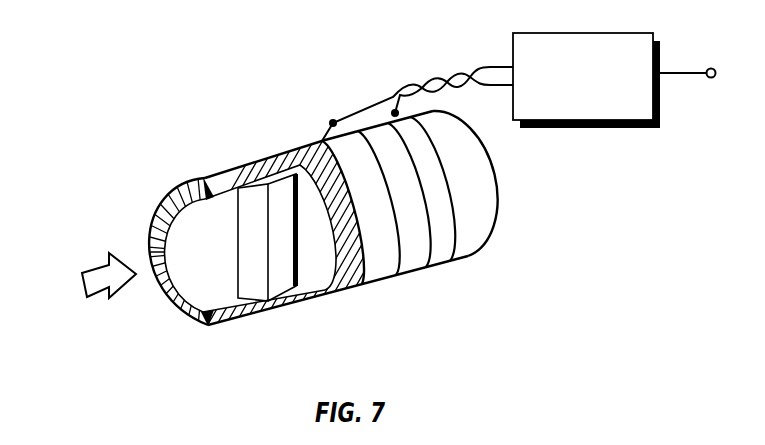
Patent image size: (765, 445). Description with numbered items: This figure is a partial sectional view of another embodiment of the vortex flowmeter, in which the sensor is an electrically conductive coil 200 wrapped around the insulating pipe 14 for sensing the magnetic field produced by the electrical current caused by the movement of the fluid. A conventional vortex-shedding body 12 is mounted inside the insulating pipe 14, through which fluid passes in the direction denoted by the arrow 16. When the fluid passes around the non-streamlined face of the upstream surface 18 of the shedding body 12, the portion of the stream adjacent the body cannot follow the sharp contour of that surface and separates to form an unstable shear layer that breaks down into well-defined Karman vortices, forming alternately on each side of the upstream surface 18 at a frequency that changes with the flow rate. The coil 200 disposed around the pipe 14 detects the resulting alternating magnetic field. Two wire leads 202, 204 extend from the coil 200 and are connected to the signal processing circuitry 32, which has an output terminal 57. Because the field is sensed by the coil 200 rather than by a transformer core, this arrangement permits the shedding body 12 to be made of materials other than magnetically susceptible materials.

The vortex-shedding body 12 is at (235, 172).
The insulating pipe 14 is at (188, 321).
The arrow 16 is at (96, 268).
The upstream surface 18 is at (254, 311).
The signal processing circuitry 32 is at (604, 33).
The output terminal 57 is at (692, 77).
The coil 200 is at (412, 270).
The first coil wire lead 202 is at (336, 118).
The second coil wire lead 204 is at (434, 88).